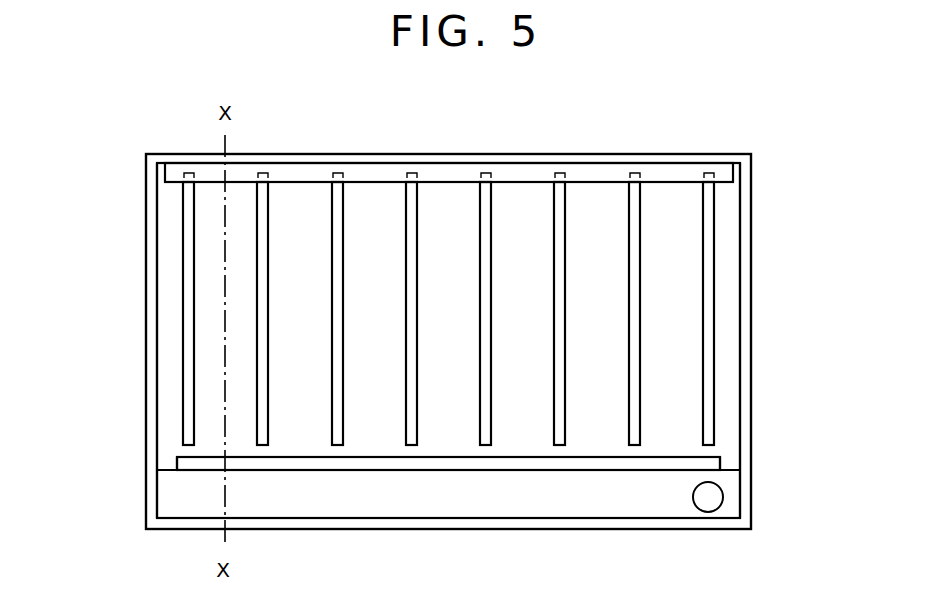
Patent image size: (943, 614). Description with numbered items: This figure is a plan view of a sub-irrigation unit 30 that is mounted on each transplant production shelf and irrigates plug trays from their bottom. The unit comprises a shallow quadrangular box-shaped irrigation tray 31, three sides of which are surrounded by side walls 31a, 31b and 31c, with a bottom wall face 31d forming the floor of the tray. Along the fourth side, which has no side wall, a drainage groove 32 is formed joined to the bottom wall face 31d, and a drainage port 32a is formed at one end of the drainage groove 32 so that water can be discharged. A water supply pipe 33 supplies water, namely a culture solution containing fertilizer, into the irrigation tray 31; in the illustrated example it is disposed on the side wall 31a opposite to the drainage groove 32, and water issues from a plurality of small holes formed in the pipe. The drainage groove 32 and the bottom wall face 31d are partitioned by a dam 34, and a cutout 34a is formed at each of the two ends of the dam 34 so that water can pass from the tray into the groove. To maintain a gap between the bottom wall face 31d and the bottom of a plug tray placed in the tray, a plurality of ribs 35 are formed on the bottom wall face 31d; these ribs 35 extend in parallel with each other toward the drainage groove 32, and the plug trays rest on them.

The sub-irrigation unit 30 is at (727, 137).
The irrigation tray 31 is at (433, 318).
The side wall 31a is at (403, 156).
The side wall 31b is at (154, 239).
The side wall 31c is at (747, 246).
The bottom wall face 31d is at (677, 364).
The drainage groove 32 is at (522, 501).
The drainage port 32a is at (708, 497).
The water supply pipe 33 is at (523, 175).
The dam 34 is at (385, 463).
The cutout 34a is at (162, 457).
The ribs 35 is at (268, 212).